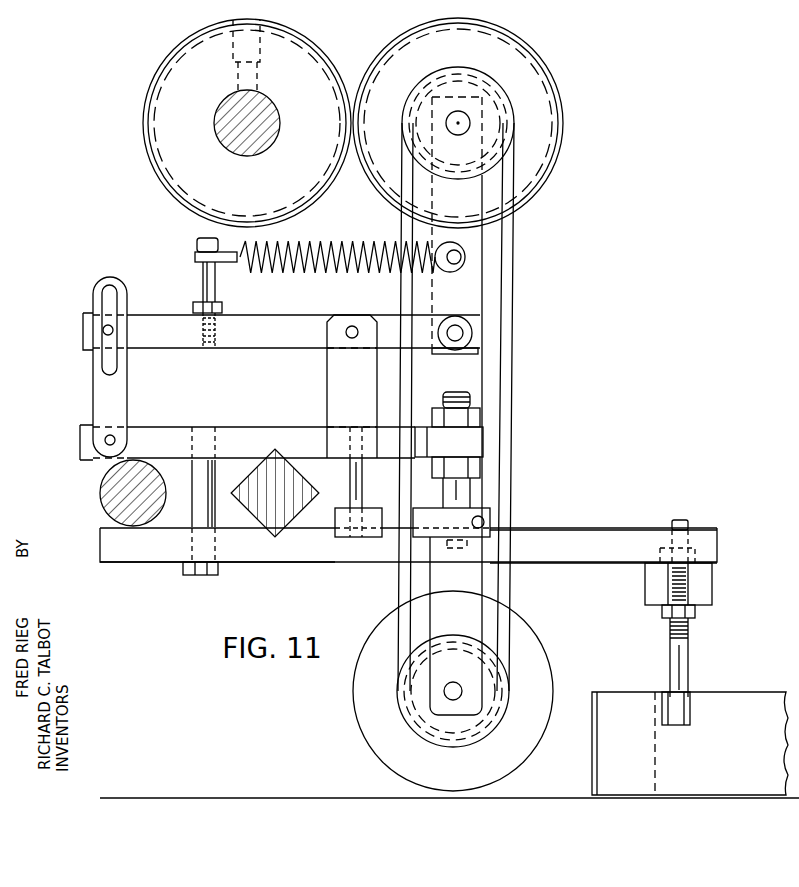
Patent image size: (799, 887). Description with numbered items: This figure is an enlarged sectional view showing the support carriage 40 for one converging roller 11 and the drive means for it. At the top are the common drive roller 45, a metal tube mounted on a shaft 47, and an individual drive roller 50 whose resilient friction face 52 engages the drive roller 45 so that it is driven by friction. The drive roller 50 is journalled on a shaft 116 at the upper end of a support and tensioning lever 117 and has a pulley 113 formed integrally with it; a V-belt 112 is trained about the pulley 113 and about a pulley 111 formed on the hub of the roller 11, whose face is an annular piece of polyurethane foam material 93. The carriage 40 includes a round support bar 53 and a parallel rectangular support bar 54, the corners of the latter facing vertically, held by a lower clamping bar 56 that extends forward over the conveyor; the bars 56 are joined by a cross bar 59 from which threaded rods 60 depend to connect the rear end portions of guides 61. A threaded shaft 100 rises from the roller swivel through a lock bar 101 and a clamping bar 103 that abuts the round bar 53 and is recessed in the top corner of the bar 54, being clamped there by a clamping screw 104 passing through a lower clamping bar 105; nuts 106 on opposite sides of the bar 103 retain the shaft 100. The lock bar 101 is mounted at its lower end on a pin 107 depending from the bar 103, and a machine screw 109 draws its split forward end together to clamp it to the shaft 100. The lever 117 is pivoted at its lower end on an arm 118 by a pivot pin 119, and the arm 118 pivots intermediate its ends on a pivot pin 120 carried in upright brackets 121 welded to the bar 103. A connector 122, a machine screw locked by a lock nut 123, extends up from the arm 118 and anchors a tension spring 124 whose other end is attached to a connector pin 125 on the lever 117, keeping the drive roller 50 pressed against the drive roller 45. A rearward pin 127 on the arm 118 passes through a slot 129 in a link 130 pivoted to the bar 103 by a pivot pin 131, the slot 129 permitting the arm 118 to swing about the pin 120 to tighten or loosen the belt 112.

The converging roller 11 is at (537, 636).
The carriage 40 is at (158, 562).
The drive roller 45 is at (205, 40).
The shaft 47 is at (222, 130).
The drive roller 50 is at (554, 158).
The resilient face 52 is at (551, 73).
The round support bar 53 is at (101, 489).
The rectangular support bar 54 is at (280, 452).
The clamping bar 56 is at (630, 530).
The cross bar 59 is at (712, 588).
The threaded rod 60 is at (690, 660).
The guide 61 is at (762, 698).
The polyurethane foam material 93 is at (536, 750).
The threaded shaft 100 is at (468, 497).
The lock bar 101 is at (490, 517).
The clamping bar 103 is at (485, 440).
The clamping screw 104 is at (208, 578).
The lower clamping bar 105 is at (300, 563).
The nut 106 is at (475, 420).
The pin 107 is at (362, 506).
The machine screw 109 is at (484, 525).
The pulley 111 is at (508, 697).
The V-belt 112 is at (400, 582).
The pulley 113 is at (438, 74).
The shaft 116 is at (462, 120).
The support and tensioning lever 117 is at (484, 292).
The arm 118 is at (424, 353).
The pivot pin 119 is at (463, 333).
The pivot pin 120 is at (353, 326).
The upright bracket 121 is at (327, 376).
The connector 122 is at (203, 283).
The lock nut 123 is at (224, 306).
The tension spring 124 is at (338, 242).
The connector pin 125 is at (466, 257).
The pin 127 is at (103, 330).
The slot 129 is at (108, 290).
The link 130 is at (96, 402).
The pivot pin 131 is at (114, 437).